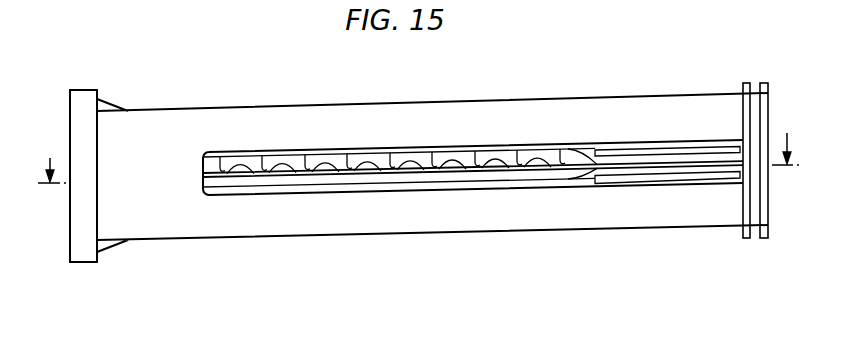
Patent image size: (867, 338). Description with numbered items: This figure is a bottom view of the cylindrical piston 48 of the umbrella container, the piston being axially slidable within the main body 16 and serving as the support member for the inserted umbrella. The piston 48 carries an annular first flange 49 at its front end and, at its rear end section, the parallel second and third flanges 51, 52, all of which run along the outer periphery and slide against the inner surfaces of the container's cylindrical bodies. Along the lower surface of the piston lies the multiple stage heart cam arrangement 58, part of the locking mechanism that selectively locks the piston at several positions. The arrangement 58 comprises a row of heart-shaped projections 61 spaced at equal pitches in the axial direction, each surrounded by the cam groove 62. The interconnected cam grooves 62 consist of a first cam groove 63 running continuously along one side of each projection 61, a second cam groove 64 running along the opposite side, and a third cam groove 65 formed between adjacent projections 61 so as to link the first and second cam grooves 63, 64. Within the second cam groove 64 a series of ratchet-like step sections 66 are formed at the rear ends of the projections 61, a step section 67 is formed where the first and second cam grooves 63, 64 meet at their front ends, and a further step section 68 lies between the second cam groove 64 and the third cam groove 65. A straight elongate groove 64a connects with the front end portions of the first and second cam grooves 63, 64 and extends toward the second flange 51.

The main body 16 is at (418, 145).
The cylindrical piston 48 is at (185, 109).
The first flange 49 is at (82, 90).
The second flange 51 is at (744, 86).
The third flange 52 is at (764, 83).
The multiple stage heart cam arrangement 58 is at (291, 150).
The heart-shaped projection 61 is at (236, 182).
The cam groove 62 is at (160, 143).
The first cam groove 63 is at (210, 195).
The second cam groove 64 is at (211, 158).
The straight elongate groove 64a is at (628, 168).
The third cam groove 65 is at (207, 175).
The step section 66 is at (220, 156).
The step section 67 is at (586, 148).
The step section 68 is at (232, 168).